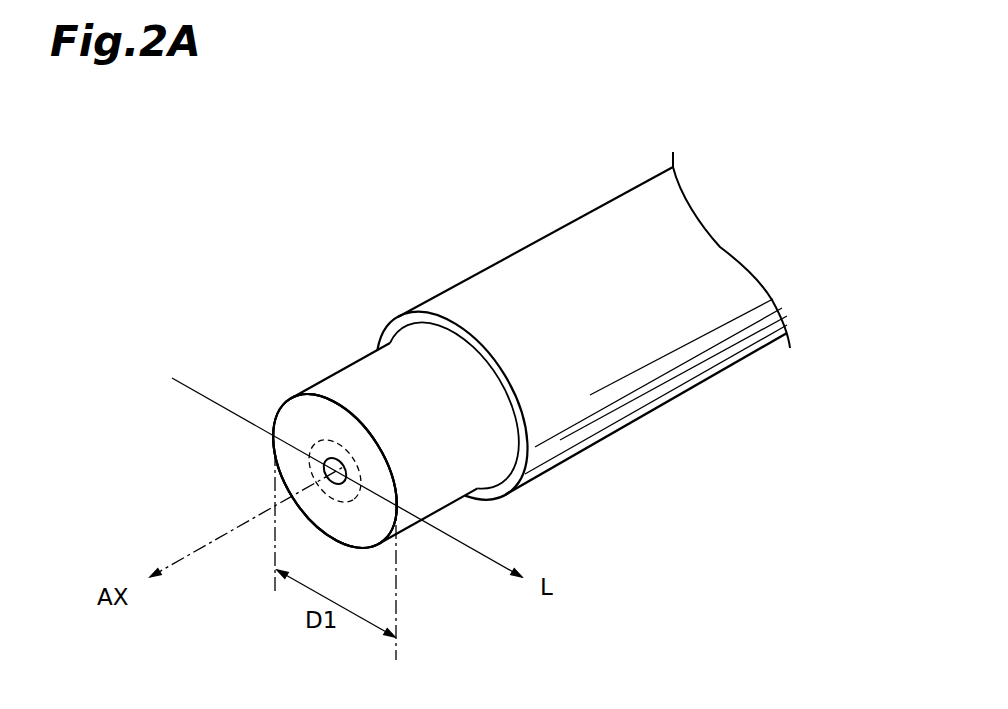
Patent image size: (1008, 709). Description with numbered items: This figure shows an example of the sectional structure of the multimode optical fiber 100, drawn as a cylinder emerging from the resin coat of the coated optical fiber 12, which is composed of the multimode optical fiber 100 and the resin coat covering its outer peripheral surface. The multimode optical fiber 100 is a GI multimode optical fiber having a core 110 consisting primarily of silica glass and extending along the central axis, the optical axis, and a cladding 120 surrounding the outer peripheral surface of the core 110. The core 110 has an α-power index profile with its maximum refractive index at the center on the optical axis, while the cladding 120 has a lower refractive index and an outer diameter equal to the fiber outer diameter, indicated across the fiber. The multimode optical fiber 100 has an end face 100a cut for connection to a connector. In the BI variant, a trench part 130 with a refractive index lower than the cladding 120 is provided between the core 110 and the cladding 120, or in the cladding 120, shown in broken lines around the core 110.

The coated optical fiber 12 is at (537, 222).
The multimode optical fiber 100 is at (349, 362).
The end face 100a is at (302, 412).
The core 110 is at (340, 480).
The cladding 120 is at (292, 472).
The trench part 130 is at (338, 482).